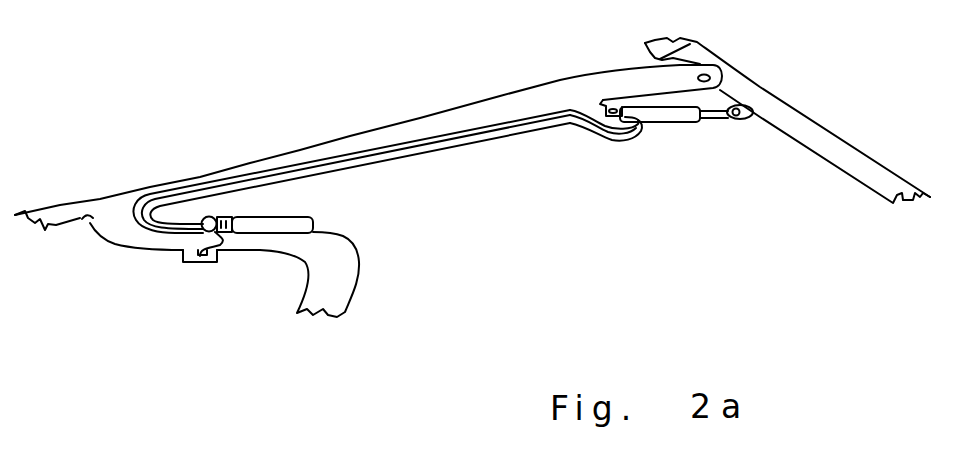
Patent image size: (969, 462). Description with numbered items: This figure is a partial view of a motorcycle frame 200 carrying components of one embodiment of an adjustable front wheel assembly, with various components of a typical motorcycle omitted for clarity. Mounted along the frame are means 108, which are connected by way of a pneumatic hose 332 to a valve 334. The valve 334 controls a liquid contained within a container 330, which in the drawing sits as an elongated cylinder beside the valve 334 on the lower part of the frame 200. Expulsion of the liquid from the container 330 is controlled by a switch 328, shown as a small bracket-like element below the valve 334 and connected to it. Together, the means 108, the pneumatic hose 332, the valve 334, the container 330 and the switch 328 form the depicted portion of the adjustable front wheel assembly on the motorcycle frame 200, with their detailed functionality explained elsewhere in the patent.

The motorcycle frame 200 is at (373, 104).
The means 108 is at (668, 124).
The pneumatic hose 332 is at (597, 131).
The valve 334 is at (218, 217).
The container 330 is at (316, 223).
The switch 328 is at (193, 262).